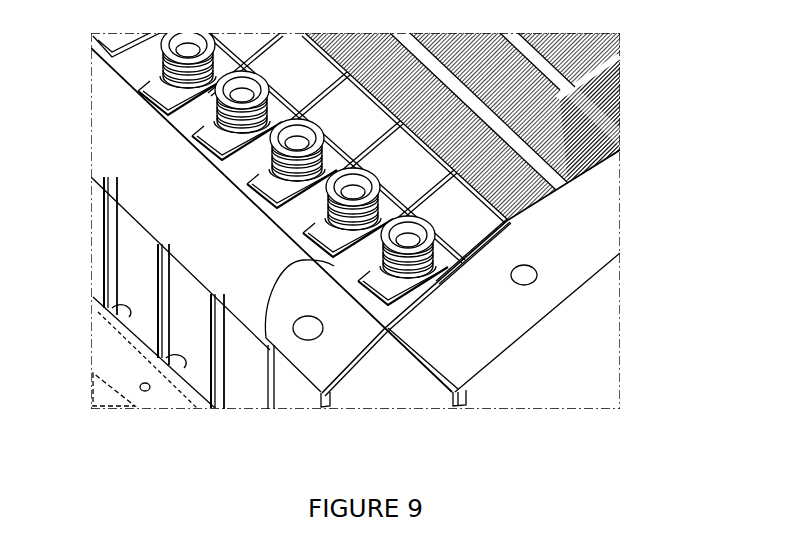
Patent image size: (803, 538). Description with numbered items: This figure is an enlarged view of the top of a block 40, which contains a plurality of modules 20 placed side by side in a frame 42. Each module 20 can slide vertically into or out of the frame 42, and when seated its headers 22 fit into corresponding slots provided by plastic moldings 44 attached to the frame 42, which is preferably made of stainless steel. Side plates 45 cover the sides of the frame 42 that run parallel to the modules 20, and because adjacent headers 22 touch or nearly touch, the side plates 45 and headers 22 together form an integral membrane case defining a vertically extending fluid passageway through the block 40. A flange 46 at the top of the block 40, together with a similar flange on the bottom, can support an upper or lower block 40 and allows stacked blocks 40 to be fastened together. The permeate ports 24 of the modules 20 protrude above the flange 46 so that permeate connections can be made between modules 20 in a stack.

The module 20 is at (606, 92).
The header 22 is at (480, 221).
The permeate port 24 is at (415, 258).
The block 40 is at (56, 120).
The frame 42 is at (470, 348).
The plastic molding 44 is at (266, 342).
The side plate 45 is at (620, 321).
The flange 46 is at (560, 270).